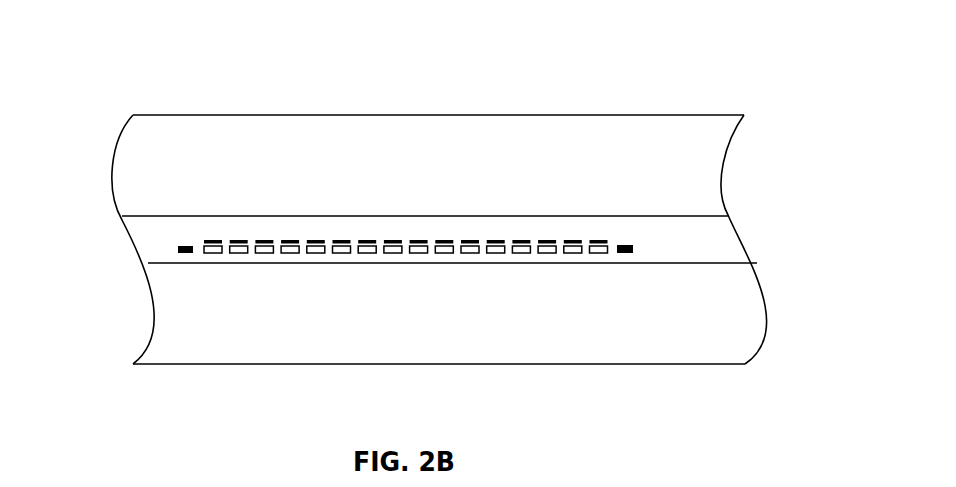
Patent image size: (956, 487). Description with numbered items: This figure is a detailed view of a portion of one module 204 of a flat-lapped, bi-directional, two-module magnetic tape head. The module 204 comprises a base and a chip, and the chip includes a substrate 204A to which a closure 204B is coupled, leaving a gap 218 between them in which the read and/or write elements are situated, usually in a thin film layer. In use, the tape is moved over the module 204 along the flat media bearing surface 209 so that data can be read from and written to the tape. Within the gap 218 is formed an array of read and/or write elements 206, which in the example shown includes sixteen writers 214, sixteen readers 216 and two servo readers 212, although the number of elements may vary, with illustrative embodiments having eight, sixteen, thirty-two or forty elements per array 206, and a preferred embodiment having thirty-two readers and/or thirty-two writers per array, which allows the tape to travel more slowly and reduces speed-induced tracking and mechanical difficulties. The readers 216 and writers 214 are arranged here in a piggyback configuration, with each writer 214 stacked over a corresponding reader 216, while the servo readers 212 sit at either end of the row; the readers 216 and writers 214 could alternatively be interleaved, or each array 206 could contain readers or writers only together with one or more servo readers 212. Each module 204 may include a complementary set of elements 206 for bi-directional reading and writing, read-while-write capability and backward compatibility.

The module 204 is at (147, 98).
The substrate 204A is at (237, 115).
The closure 204B is at (288, 364).
The media bearing surface 209 is at (368, 180).
The writers 214 is at (520, 239).
The readers 216 is at (523, 254).
The servo readers 212 is at (178, 248).
The array of read and/or write elements 206 is at (652, 237).
The gap 218 is at (745, 240).